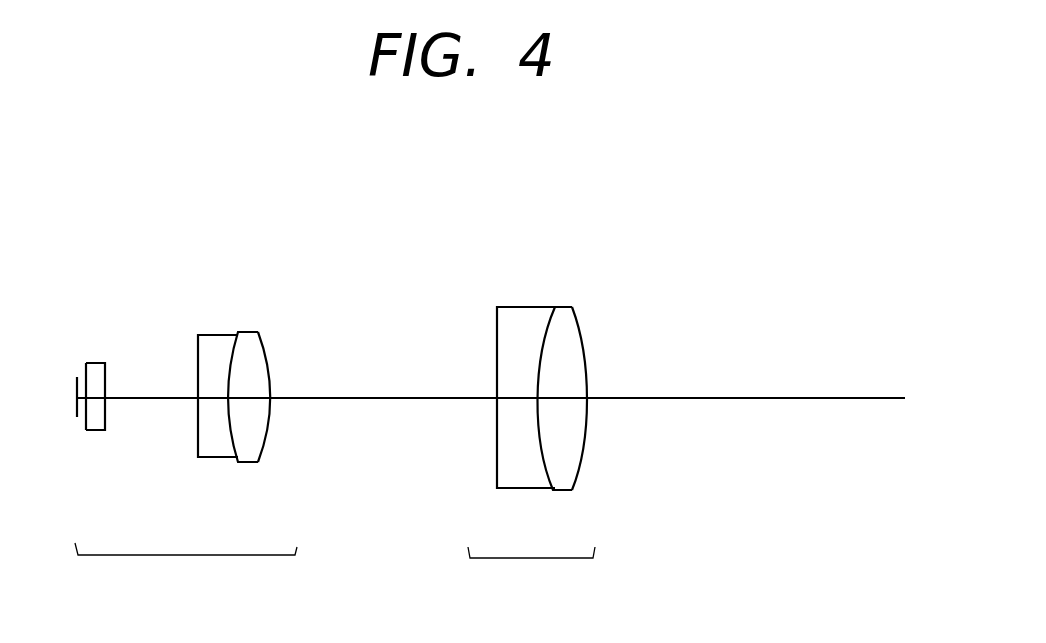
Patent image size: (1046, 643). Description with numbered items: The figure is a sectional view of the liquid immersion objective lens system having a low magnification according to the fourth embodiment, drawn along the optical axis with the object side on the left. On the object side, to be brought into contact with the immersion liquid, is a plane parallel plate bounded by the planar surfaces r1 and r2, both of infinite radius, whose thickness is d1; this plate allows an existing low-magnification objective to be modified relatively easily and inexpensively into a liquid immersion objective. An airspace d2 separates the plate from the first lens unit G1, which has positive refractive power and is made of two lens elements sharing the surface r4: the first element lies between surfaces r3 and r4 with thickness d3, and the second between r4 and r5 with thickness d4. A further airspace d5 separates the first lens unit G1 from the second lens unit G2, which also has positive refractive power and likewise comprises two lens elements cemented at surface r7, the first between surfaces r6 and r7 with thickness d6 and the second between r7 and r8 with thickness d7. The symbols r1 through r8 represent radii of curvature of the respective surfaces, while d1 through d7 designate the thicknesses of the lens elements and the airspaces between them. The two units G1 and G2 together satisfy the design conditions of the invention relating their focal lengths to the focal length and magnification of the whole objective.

The first lens surface r1 is at (84, 376).
The second lens surface r2 is at (105, 380).
The third lens surface r3 is at (197, 358).
The fourth lens surface r4 is at (237, 353).
The fifth lens surface r5 is at (267, 357).
The sixth lens surface r6 is at (497, 338).
The seventh lens surface r7 is at (547, 338).
The eighth lens surface r8 is at (580, 338).
The thickness of plane parallel plate d1 is at (97, 400).
The airspace d2 is at (147, 400).
The thickness of first lens element d3 is at (213, 400).
The thickness of second lens element d4 is at (250, 400).
The airspace d5 is at (360, 398).
The thickness of third lens element d6 is at (518, 400).
The thickness of fourth lens element d7 is at (567, 400).
The first lens unit G1 is at (186, 569).
The second lens unit G2 is at (531, 572).